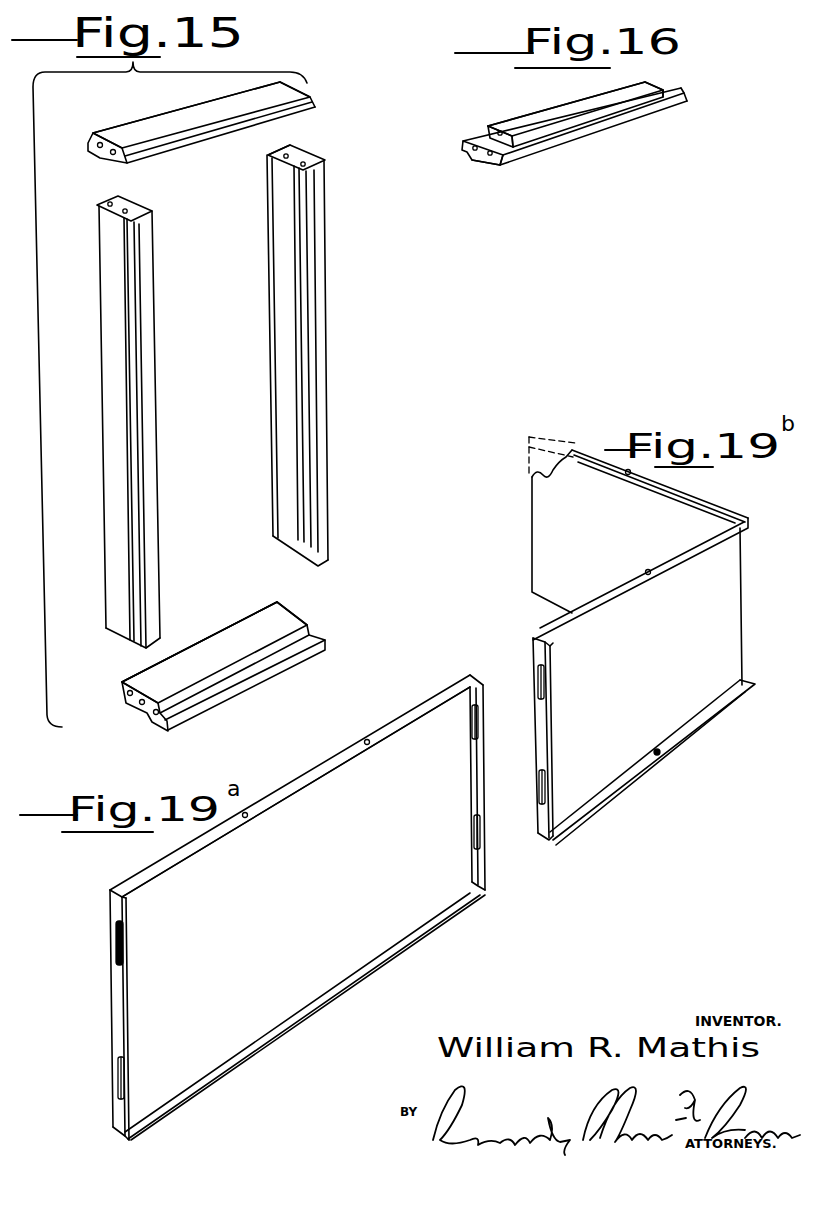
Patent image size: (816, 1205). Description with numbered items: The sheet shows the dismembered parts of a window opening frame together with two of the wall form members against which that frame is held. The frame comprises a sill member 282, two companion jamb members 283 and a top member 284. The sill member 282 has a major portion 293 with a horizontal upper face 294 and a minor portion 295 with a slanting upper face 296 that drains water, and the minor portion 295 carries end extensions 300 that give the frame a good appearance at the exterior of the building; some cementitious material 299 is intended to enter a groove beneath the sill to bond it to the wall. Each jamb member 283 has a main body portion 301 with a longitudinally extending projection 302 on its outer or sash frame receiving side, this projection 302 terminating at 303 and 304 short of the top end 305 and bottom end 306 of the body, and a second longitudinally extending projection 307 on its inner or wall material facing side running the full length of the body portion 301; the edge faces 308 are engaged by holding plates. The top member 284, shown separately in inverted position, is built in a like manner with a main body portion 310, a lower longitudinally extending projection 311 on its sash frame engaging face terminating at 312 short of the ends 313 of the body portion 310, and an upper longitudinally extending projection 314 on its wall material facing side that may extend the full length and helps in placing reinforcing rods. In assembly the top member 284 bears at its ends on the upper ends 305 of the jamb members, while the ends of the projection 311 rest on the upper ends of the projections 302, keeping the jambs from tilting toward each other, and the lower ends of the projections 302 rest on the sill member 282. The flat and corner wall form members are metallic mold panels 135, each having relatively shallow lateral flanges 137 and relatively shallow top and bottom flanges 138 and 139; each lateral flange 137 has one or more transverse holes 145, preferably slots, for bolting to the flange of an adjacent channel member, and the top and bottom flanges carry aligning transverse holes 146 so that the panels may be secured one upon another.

In FIG. 19A, the mold panel 135 is at (323, 885).
In FIG. 19B, the lateral flange 137 is at (548, 662).
In FIG. 19A, the lateral flange 137 is at (128, 1002).
In FIG. 19B, the top flange 138 is at (615, 602).
In FIG. 19A, the top flange 138 is at (293, 792).
In FIG. 19B, the bottom flange 139 is at (640, 773).
In FIG. 19A, the bottom flange 139 is at (326, 988).
In FIG. 19B, the transverse hole 145 is at (545, 773).
In FIG. 19A, the transverse hole 145 is at (113, 950).
In FIG. 19B, the transverse hole 146 is at (648, 572).
In FIG. 19A, the transverse hole 146 is at (363, 743).
In FIG. 15, the sill member 282 is at (277, 602).
In FIG. 15, the jamb member 283 is at (272, 155).
In FIG. 15, the top member 284 is at (280, 84).
In FIG. 16, the top member 284 is at (647, 82).
In FIG. 15, the major portion 293 is at (205, 637).
In FIG. 15, the horizontal upper face 294 is at (226, 667).
In FIG. 15, the minor portion 295 is at (210, 707).
In FIG. 15, the slanting upper face 296 is at (237, 676).
In FIG. 15, the cementitious material 299 is at (147, 718).
In FIG. 15, the end extension 300 is at (327, 641).
In FIG. 15, the main body portion 301 is at (148, 232).
In FIG. 15, the longitudinally extending projection 302 is at (273, 316).
In FIG. 15, the upper termination 303 is at (267, 163).
In FIG. 15, the lower termination 304 is at (277, 540).
In FIG. 15, the top end 305 is at (123, 207).
In FIG. 15, the bottom end 306 is at (153, 647).
In FIG. 15, the longitudinally extending projection 307 is at (103, 411).
In FIG. 15, the edge face 308 is at (147, 432).
In FIG. 15, the main body portion 310 is at (315, 107).
In FIG. 16, the main body portion 310 is at (580, 132).
In FIG. 16, the longitudinally extending projection 311 is at (523, 122).
In FIG. 16, the termination 312 is at (667, 77).
In FIG. 16, the end 313 is at (688, 95).
In FIG. 15, the longitudinally extending projection 314 is at (133, 129).
In FIG. 16, the longitudinally extending projection 314 is at (493, 163).